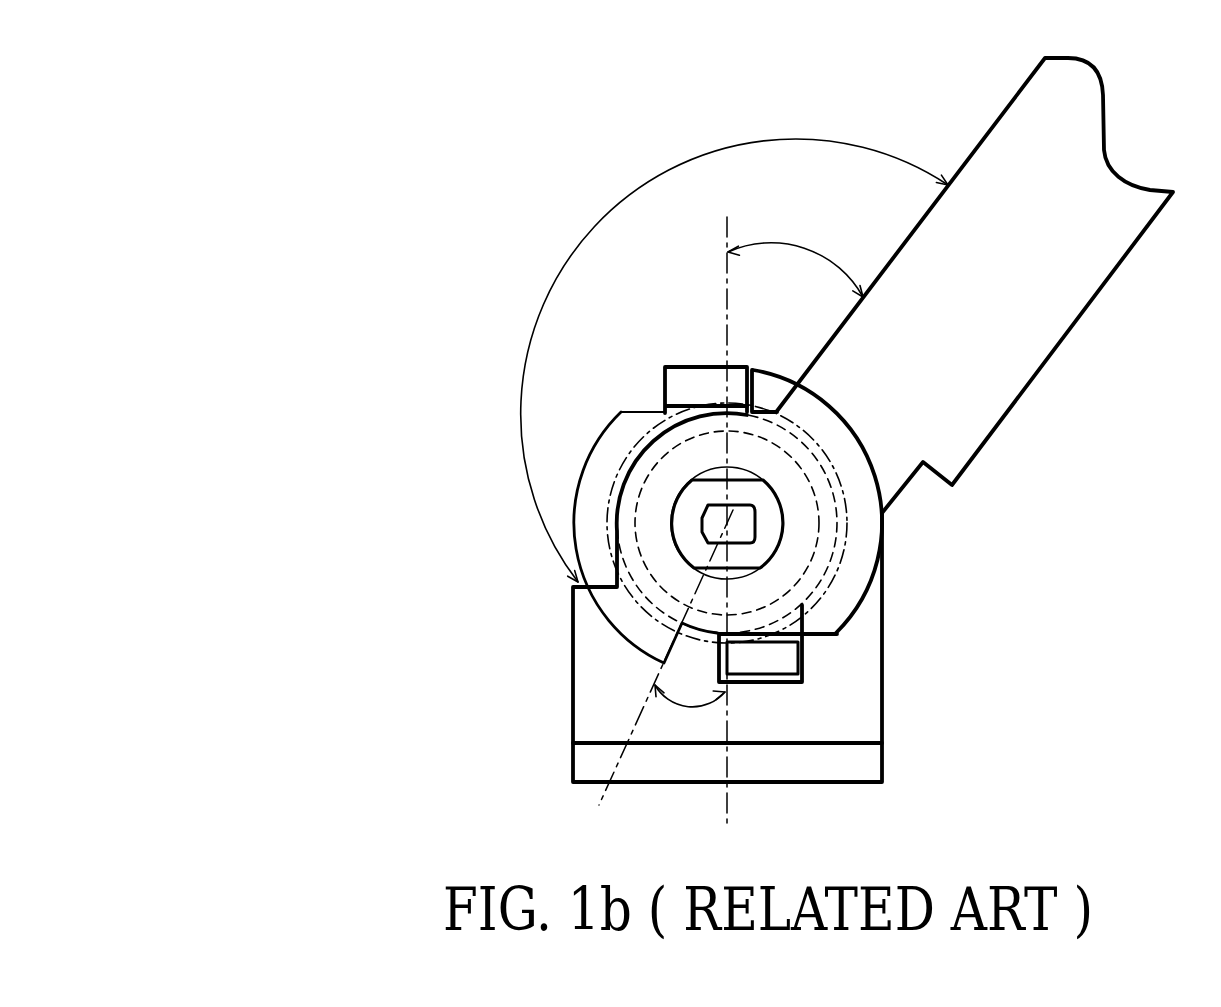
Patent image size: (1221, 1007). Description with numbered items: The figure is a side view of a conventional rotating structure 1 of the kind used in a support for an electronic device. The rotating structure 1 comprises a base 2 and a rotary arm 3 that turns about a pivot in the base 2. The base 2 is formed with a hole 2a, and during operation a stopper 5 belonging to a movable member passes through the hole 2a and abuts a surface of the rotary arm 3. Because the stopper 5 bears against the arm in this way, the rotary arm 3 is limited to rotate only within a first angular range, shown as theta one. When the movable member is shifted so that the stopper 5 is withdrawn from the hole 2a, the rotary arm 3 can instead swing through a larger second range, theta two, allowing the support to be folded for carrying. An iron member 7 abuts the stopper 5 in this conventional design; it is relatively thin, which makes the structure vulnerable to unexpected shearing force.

The rotating structure 1 is at (200, 117).
The base 2 is at (846, 713).
The hole 2a is at (780, 676).
The rotary arm 3 is at (1037, 331).
The stopper 5 is at (780, 649).
The iron member 7 is at (655, 657).